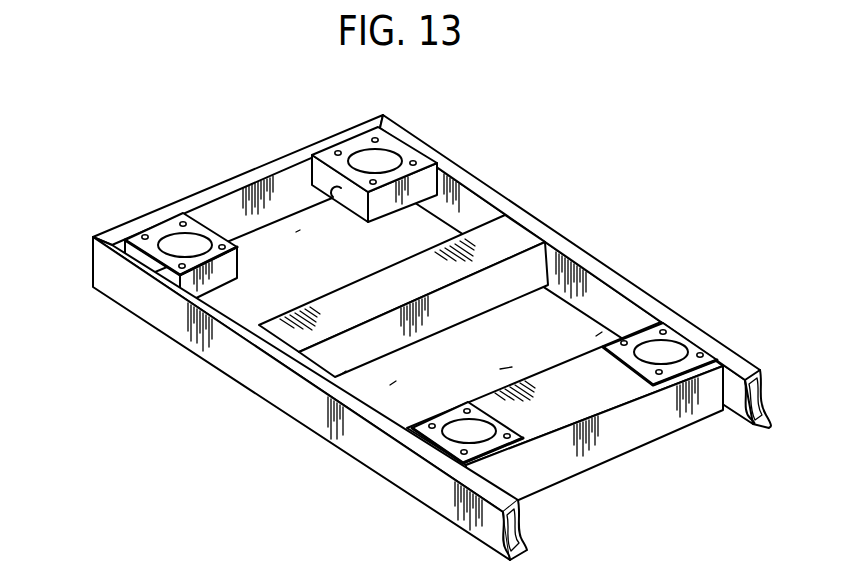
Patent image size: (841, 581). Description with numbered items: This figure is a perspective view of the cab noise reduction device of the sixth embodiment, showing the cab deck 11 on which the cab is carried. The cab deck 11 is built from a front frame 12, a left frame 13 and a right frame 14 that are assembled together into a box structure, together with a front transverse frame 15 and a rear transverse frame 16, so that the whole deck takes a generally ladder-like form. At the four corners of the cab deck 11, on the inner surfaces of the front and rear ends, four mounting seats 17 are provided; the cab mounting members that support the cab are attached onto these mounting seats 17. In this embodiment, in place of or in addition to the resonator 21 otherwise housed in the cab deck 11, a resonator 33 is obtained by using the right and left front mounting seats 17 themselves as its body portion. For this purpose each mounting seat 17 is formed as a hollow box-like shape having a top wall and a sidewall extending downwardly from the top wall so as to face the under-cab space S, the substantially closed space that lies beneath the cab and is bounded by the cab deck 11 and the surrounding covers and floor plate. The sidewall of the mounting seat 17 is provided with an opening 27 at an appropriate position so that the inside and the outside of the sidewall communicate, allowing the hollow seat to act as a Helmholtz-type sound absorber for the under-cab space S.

The cab deck 11 is at (432, 314).
The front frame 12 is at (250, 170).
The left frame 13 is at (250, 370).
The right frame 14 is at (543, 216).
The front transverse frame 15 is at (363, 298).
The rear transverse frame 16 is at (622, 437).
The mounting seat 17 is at (124, 258).
The resonator 21 is at (393, 382).
The opening 27 is at (337, 196).
The resonator 33 is at (153, 223).
The under-cab space S is at (298, 232).